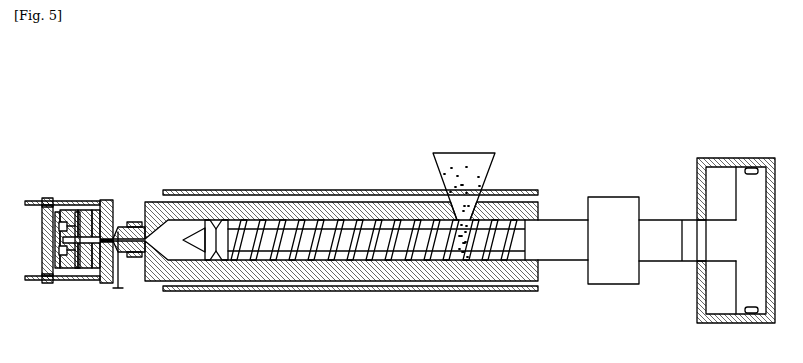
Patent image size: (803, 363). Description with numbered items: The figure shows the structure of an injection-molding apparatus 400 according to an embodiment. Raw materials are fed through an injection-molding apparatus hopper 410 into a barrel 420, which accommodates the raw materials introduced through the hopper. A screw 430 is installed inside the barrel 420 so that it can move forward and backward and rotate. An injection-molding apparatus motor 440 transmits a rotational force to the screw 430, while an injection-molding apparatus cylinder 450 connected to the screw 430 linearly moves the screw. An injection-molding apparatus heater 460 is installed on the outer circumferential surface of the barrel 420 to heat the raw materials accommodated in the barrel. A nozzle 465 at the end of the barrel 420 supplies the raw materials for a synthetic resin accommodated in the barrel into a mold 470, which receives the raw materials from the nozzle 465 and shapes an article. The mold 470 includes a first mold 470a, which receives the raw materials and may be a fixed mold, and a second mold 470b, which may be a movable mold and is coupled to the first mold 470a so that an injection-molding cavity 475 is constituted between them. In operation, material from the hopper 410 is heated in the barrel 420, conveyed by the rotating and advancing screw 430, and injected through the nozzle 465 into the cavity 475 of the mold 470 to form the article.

The injection-molding apparatus 400 is at (332, 52).
The injection-molding apparatus hopper 410 is at (475, 150).
The barrel 420 is at (331, 198).
The screw 430 is at (253, 262).
The injection-molding apparatus motor 440 is at (618, 195).
The injection-molding apparatus cylinder 450 is at (742, 182).
The injection-molding apparatus heater 460 is at (209, 187).
The nozzle 465 is at (123, 272).
The mold 470 is at (76, 222).
The first mold 470a is at (95, 208).
The second mold 470b is at (68, 210).
The injection-molding cavity 475 is at (94, 250).